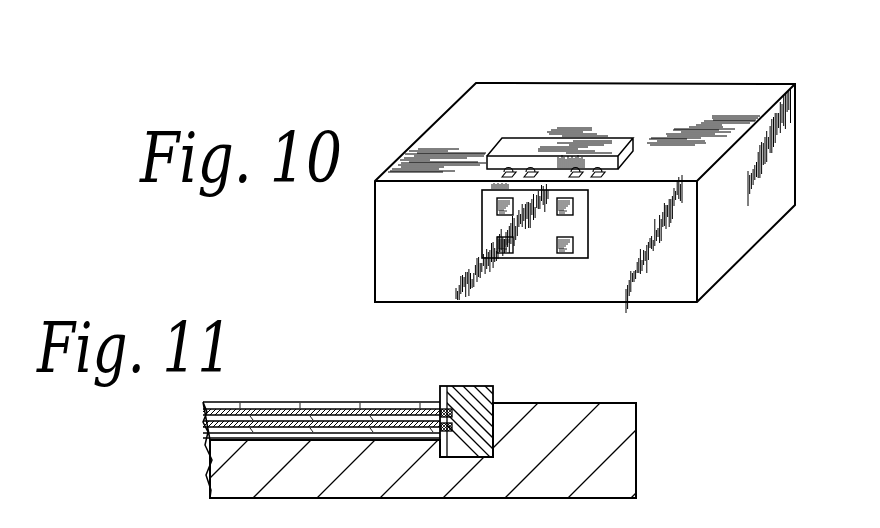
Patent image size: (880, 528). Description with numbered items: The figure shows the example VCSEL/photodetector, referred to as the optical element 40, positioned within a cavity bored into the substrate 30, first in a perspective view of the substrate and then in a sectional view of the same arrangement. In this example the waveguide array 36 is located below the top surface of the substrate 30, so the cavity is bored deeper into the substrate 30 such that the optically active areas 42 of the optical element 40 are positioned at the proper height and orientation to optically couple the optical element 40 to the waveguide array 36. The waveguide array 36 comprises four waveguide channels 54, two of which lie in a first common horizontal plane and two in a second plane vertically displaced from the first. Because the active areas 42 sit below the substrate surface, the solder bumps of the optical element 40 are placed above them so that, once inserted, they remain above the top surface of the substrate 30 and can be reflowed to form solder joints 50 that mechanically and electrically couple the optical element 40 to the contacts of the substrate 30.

In FIG. 10, the substrate 30 is at (795, 85).
In FIG. 11, the substrate 30 is at (636, 403).
In FIG. 10, the waveguide array 36 is at (542, 261).
In FIG. 10, the optical element 40 is at (523, 138).
In FIG. 11, the optical element 40 is at (464, 386).
In FIG. 11, the optically active area 42 is at (452, 427).
In FIG. 10, the solder joint 50 is at (508, 165).
In FIG. 10, the waveguide channel 54 is at (497, 207).
In FIG. 11, the waveguide channel 54 is at (362, 432).